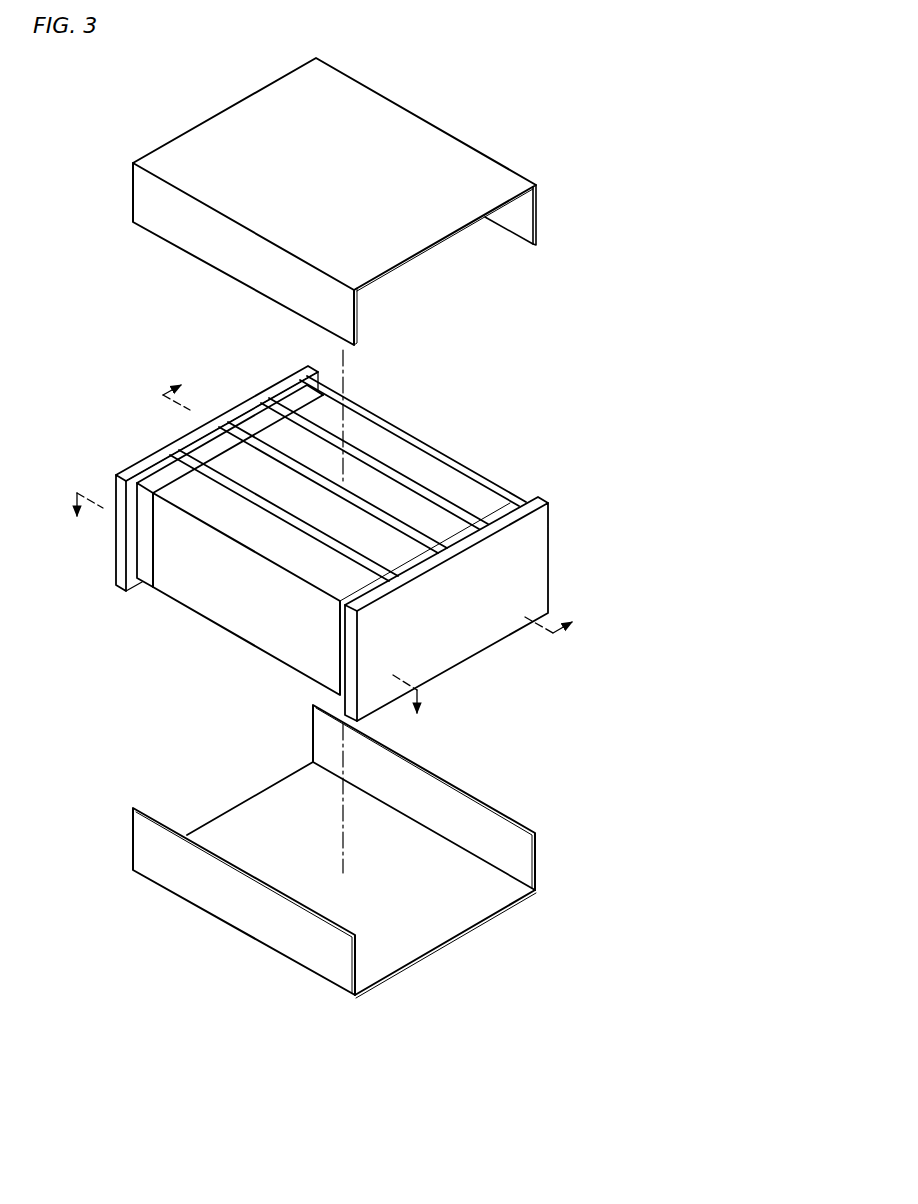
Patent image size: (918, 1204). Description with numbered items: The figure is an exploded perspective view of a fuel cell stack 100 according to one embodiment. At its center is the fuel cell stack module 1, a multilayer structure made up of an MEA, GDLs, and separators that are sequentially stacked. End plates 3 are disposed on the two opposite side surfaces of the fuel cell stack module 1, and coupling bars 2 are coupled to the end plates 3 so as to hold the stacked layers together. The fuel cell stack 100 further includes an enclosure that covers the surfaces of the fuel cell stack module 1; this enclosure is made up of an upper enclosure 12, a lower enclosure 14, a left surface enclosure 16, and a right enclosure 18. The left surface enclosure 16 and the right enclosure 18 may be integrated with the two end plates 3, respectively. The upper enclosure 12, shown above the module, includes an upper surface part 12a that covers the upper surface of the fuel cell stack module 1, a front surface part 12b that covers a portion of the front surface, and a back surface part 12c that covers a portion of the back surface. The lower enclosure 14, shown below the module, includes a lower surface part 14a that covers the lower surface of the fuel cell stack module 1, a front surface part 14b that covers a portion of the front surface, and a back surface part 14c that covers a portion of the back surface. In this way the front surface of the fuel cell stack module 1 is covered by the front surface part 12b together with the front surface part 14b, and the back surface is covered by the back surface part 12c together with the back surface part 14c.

The fuel cell stack 100 is at (86, 86).
The upper enclosure 12 is at (452, 119).
The upper surface part 12a is at (405, 222).
The front surface part 12b is at (182, 236).
The back surface part 12c is at (538, 215).
The left surface enclosure 16 is at (155, 457).
The end plate 3 is at (134, 561).
The fuel cell stack module 1 is at (227, 598).
The coupling bar 2 is at (388, 478).
The right enclosure 18 is at (448, 643).
The lower enclosure 14 is at (249, 951).
The lower surface part 14a is at (437, 908).
The front surface part 14b is at (195, 885).
The back surface part 14c is at (483, 802).